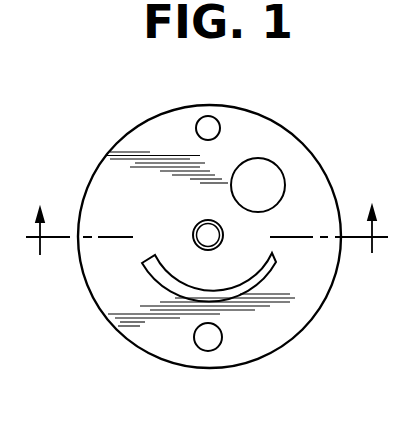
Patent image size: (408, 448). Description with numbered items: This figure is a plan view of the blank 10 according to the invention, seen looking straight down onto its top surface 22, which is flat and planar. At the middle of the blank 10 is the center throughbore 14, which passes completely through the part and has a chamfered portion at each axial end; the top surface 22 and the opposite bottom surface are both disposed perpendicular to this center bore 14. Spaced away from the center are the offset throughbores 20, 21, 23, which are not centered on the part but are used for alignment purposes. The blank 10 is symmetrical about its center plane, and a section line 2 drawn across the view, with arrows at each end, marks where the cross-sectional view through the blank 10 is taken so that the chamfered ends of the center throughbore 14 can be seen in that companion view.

The section line 2- 2 is at (207, 247).
The blank 10 is at (103, 160).
The center throughbore 14 is at (213, 225).
The offset throughbore 20 is at (259, 157).
The offset throughbore 21 is at (207, 124).
The top surface 22 is at (141, 330).
The offset throughbore 23 is at (213, 346).